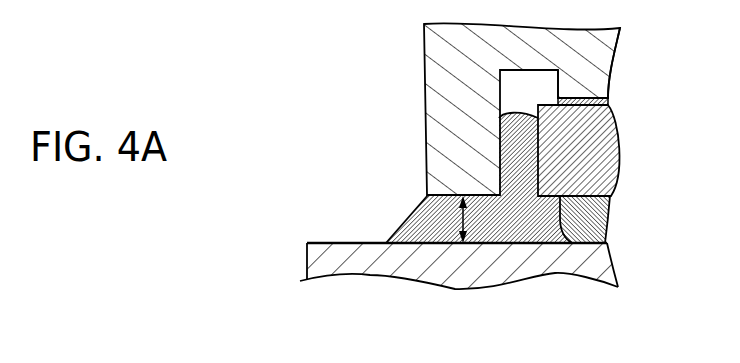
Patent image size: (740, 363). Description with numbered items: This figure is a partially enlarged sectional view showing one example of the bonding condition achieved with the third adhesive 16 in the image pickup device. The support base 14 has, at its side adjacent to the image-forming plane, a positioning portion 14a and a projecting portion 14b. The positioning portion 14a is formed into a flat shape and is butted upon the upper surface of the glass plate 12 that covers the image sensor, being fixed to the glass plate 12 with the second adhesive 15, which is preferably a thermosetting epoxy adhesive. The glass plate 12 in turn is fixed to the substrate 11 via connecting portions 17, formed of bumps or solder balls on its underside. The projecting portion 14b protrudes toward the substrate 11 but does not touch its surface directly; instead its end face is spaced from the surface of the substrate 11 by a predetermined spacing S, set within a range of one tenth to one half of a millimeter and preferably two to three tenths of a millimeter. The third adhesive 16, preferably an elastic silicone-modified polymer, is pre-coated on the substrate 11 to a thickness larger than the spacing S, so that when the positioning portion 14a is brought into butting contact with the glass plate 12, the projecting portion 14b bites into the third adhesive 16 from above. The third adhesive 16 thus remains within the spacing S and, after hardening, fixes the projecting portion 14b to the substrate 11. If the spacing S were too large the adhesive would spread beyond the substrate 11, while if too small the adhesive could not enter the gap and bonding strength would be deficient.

The substrate 11 is at (428, 265).
The glass plate 12 is at (598, 152).
The support base 14 is at (438, 78).
The positioning portion 14a is at (582, 88).
The projecting portion 14b is at (460, 130).
The second adhesive 15 is at (597, 100).
The third adhesive 16 is at (410, 225).
The connecting portions 17 is at (607, 213).
The spacing S is at (481, 245).